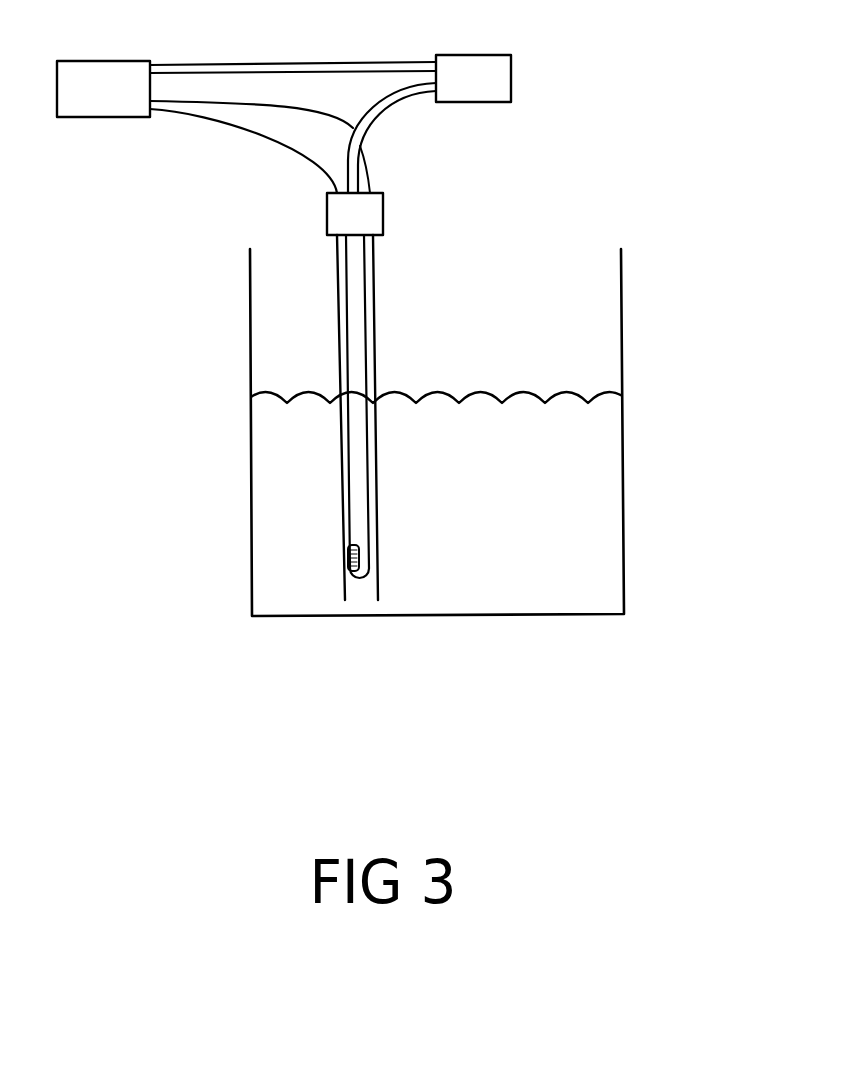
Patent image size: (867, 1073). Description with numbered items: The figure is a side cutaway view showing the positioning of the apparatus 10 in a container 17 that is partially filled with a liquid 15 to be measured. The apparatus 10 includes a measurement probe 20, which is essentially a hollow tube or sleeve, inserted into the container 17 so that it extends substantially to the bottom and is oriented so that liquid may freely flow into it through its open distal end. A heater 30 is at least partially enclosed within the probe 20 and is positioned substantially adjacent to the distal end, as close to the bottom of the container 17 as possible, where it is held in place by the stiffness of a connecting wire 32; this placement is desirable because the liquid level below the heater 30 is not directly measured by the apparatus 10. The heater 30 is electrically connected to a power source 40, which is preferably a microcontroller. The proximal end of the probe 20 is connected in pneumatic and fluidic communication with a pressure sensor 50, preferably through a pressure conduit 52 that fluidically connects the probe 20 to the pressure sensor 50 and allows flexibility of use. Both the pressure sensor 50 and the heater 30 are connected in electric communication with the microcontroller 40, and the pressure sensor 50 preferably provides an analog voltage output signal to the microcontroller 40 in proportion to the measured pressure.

The apparatus 10 is at (205, 572).
The liquid 15 is at (568, 560).
The container 17 is at (623, 487).
The measurement probe 20 is at (340, 378).
The heater 30 is at (348, 573).
The connecting wire 32 is at (368, 535).
The power source 40 is at (103, 89).
The pressure sensor 50 is at (511, 75).
The pressure conduit 52 is at (388, 105).